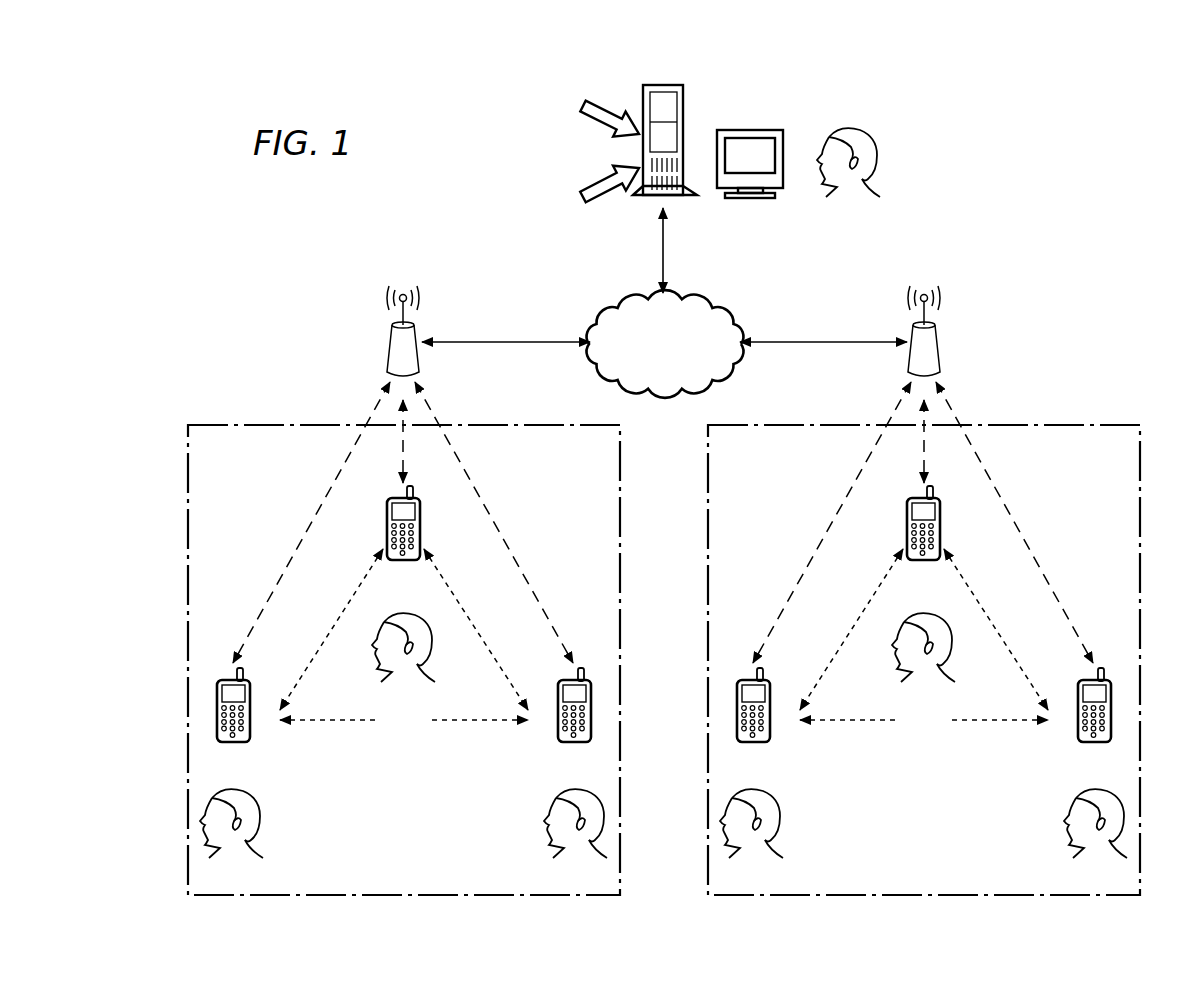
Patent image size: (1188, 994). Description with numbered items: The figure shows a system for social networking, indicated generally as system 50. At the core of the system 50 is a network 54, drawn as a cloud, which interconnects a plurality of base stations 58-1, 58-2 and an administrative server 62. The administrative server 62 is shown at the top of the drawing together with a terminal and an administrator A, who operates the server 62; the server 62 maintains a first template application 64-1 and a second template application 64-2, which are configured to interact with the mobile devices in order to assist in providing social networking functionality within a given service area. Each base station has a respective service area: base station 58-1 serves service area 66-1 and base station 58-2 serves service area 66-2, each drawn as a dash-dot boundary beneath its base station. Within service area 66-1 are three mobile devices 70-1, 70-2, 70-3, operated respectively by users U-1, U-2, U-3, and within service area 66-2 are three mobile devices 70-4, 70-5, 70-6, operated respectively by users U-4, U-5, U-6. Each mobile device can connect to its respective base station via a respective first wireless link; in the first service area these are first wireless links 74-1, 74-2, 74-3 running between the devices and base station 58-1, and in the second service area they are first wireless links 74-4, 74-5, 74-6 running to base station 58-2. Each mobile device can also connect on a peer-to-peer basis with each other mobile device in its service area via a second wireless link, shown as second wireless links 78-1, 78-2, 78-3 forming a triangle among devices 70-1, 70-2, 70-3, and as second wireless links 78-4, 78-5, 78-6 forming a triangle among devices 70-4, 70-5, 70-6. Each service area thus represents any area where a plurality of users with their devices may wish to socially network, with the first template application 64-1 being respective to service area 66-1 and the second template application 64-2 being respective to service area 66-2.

The system for social networking 50 is at (293, 275).
The network 54 is at (653, 354).
The base station 58-1 is at (378, 317).
The base station 58-2 is at (952, 315).
The administrative server 62 is at (700, 207).
The first template application 64-1 is at (566, 121).
The second template application 64-2 is at (566, 205).
The service area 66-1 is at (243, 413).
The service area 66-2 is at (1087, 413).
The mobile device 70-1 is at (213, 766).
The mobile device 70-2 is at (385, 586).
The mobile device 70-3 is at (556, 766).
The mobile device 70-4 is at (733, 766).
The mobile device 70-5 is at (905, 586).
The mobile device 70-6 is at (1076, 766).
The first wireless link 74-1 is at (317, 499).
The first wireless link 74-2 is at (451, 499).
The first wireless link 74-3 is at (385, 454).
The first wireless link 74-4 is at (837, 499).
The first wireless link 74-5 is at (905, 454).
The first wireless link 74-6 is at (971, 499).
The second wireless link 78-1 is at (385, 729).
The second wireless link 78-2 is at (324, 617).
The second wireless link 78-3 is at (444, 617).
The second wireless link 78-4 is at (905, 729).
The second wireless link 78-5 is at (844, 617).
The second wireless link 78-6 is at (964, 617).
The user U-1 is at (219, 882).
The user U-2 is at (390, 702).
The user U-3 is at (562, 882).
The user U-4 is at (739, 882).
The user U-5 is at (910, 702).
The user U-6 is at (1082, 882).
The administrator A is at (844, 222).